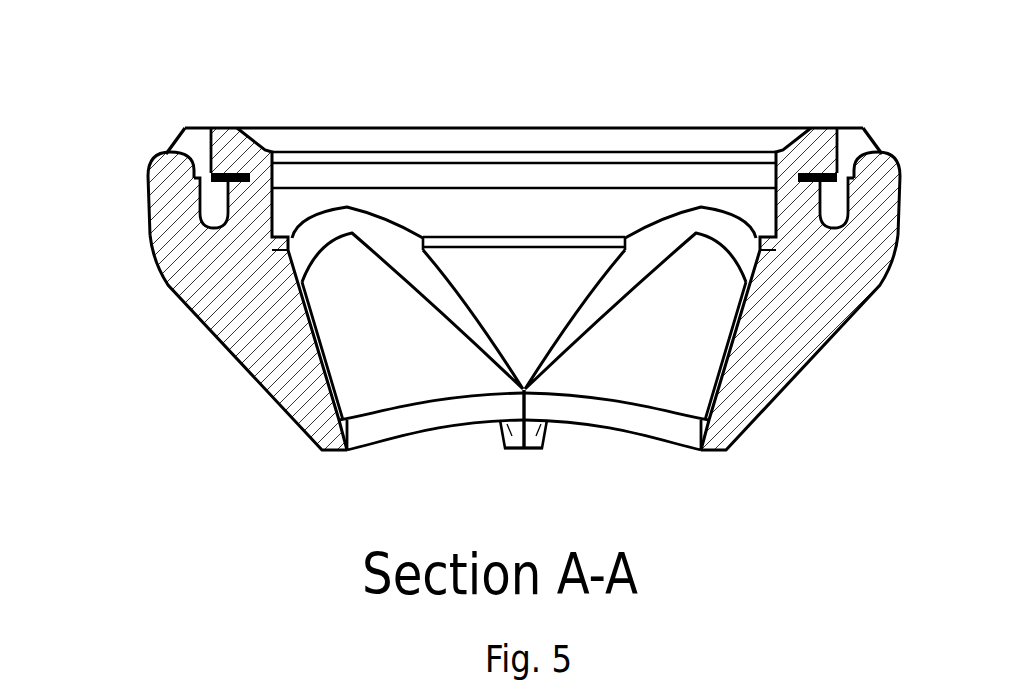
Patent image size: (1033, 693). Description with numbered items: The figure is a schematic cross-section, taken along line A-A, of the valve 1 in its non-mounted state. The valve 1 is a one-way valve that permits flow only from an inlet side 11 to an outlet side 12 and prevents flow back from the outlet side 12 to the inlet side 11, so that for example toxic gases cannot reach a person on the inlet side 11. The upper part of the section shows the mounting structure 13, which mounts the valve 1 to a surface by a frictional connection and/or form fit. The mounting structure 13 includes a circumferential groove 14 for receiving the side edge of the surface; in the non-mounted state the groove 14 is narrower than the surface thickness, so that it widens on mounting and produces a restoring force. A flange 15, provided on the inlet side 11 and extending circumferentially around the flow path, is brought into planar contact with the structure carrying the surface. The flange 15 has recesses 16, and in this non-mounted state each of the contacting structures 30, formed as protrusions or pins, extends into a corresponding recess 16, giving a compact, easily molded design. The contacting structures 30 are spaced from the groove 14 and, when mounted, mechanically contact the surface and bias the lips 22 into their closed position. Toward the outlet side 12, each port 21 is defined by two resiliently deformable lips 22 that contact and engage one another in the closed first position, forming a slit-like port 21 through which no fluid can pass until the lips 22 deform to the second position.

The valve 1 is at (516, 282).
The inlet side 11 is at (540, 107).
The outlet side 12 is at (540, 504).
The mounting structure 13 is at (516, 246).
The groove 14 is at (236, 178).
The flange 15 is at (167, 153).
The recesses 16 is at (197, 148).
The port 21 is at (560, 380).
The lips 22 is at (443, 413).
The contacting structures 30 is at (168, 163).